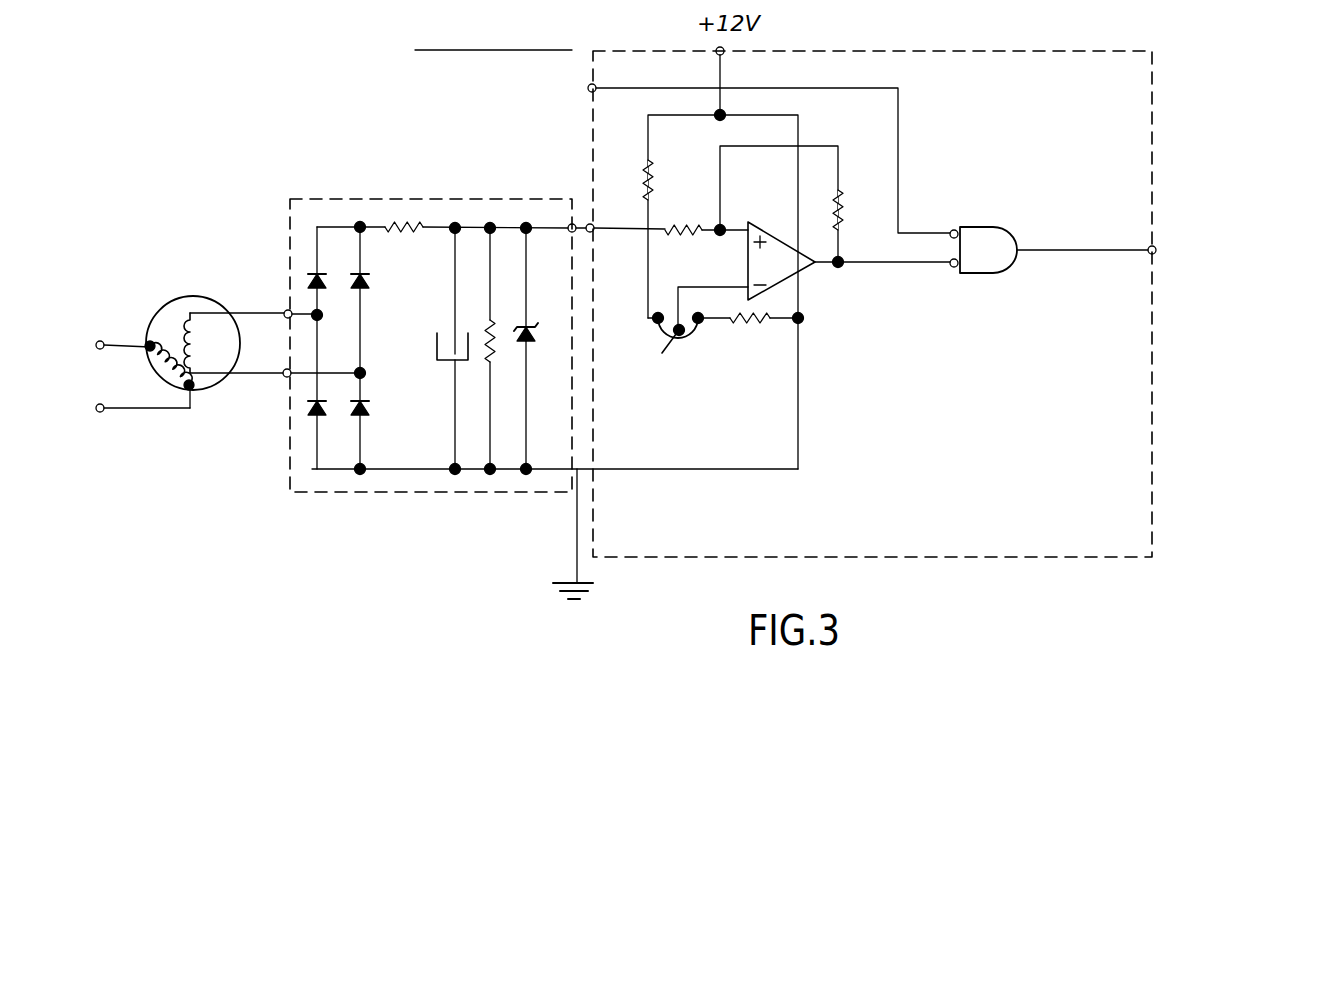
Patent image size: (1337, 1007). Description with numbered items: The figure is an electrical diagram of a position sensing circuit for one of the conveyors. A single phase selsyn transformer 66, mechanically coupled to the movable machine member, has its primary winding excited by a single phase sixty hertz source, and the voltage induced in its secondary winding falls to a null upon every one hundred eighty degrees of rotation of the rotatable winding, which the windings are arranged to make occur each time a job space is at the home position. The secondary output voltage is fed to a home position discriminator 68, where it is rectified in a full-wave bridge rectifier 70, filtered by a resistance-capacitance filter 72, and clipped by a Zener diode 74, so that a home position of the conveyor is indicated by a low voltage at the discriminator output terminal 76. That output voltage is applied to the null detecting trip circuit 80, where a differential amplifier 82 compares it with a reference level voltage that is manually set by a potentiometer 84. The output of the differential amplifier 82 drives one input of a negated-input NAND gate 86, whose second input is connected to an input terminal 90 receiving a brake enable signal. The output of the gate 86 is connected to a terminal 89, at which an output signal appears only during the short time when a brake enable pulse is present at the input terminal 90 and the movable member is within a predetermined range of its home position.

The selsyn transformer 66 is at (213, 386).
The home position discriminator 68 is at (285, 490).
The full-wave bridge rectifier 70 is at (352, 219).
The resistance-capacitance filter 72 is at (579, 360).
The Zener diode 74 is at (537, 330).
The discriminator output terminal 76 is at (570, 232).
The null detecting trip circuit 80 is at (1157, 328).
The differential amplifier 82 is at (747, 258).
The potentiometer 84 is at (674, 346).
The negated-input NAND gate 86 is at (993, 228).
The terminal 89 is at (1150, 246).
The input terminal 90 is at (589, 88).